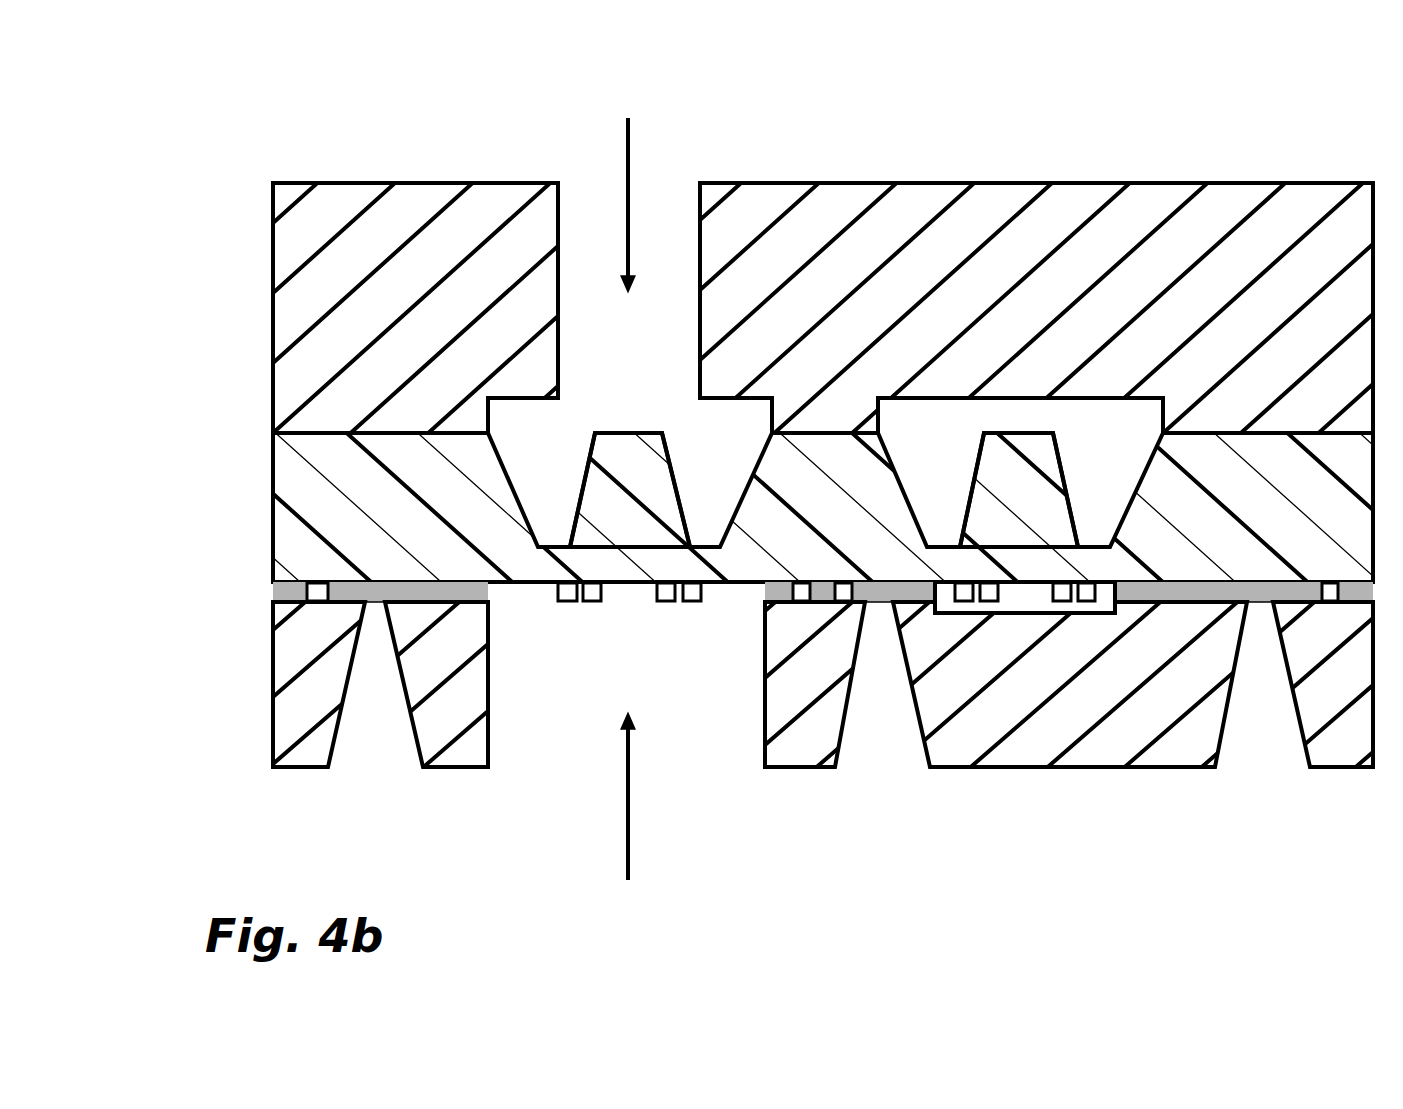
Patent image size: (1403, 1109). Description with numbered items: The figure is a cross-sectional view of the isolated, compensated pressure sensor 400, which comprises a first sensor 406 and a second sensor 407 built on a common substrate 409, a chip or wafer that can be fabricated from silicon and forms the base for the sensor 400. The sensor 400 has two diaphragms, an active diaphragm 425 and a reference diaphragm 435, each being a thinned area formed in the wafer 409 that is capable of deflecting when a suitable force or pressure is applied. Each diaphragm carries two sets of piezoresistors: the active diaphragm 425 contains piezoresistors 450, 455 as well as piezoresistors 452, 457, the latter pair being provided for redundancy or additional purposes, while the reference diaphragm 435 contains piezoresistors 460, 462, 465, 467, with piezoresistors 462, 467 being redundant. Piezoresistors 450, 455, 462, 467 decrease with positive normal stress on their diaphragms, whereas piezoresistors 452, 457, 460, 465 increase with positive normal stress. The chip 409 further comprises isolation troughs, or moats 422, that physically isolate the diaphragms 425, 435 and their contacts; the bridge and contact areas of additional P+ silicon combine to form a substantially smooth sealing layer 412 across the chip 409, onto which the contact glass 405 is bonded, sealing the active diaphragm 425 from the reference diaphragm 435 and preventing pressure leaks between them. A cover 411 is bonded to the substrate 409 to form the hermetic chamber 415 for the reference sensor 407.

The sensor 400 is at (231, 100).
The contact glass 405 is at (270, 737).
The first sensor 406 is at (580, 160).
The second sensor 407 is at (1063, 148).
The common substrate 409 is at (270, 500).
The cover 411 is at (270, 245).
The sealing layer 412 is at (736, 554).
The hermetic chamber 415 is at (923, 448).
The isolation trough 422 is at (843, 603).
The active diaphragm 425 is at (652, 472).
The reference diaphragm 435 is at (1043, 493).
The piezoresistor 450 is at (568, 603).
The piezoresistor 452 is at (592, 603).
The piezoresistor 455 is at (666, 603).
The piezoresistor 457 is at (692, 603).
The piezoresistor 460 is at (936, 614).
The piezoresistor 462 is at (988, 603).
The piezoresistor 465 is at (1087, 603).
The piezoresistor 467 is at (1062, 603).